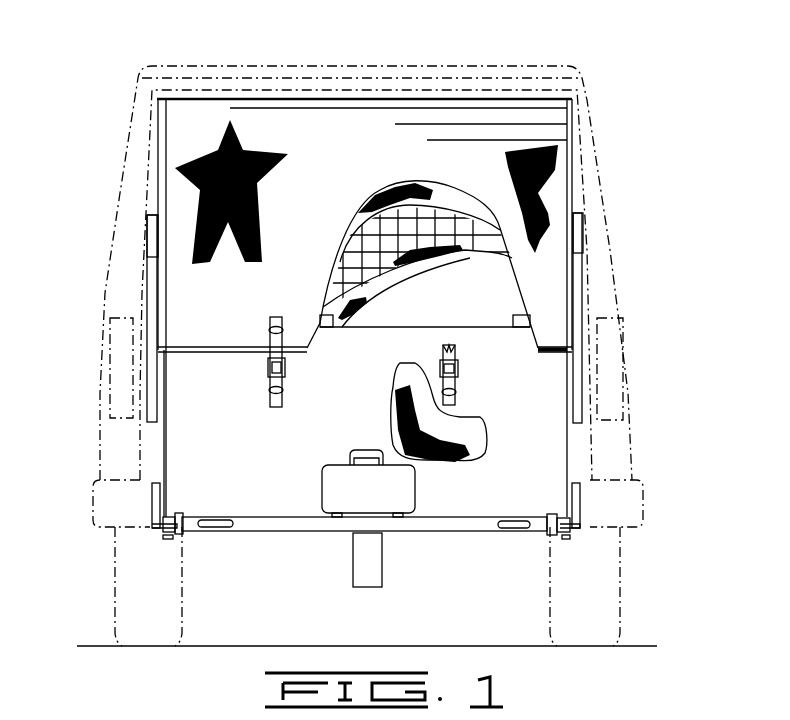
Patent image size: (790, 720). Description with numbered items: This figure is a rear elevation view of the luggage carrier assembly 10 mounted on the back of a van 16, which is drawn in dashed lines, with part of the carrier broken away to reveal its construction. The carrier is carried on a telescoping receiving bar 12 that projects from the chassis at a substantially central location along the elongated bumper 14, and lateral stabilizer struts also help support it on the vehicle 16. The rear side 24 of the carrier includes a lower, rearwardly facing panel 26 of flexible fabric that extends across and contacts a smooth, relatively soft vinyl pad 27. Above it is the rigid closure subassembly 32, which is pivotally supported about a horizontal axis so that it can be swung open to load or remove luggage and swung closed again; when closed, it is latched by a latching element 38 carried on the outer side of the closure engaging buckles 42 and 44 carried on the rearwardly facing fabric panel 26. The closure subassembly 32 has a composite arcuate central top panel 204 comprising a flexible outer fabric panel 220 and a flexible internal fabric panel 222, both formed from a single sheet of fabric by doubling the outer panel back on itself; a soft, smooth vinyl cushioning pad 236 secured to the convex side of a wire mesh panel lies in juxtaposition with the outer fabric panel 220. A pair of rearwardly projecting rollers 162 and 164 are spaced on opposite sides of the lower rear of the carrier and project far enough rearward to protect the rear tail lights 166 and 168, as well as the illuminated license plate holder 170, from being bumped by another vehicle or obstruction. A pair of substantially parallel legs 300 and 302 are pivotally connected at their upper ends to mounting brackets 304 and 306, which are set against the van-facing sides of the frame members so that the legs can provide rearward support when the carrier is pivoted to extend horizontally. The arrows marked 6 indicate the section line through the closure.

The section line for FIG. 6 is at (367, 42).
The luggage carrier assembly 10 is at (412, 538).
The telescoping receiving bar 12 is at (355, 577).
The elongated bumper 14 is at (117, 510).
The van 16 is at (123, 256).
The rear side 24 is at (543, 432).
The lower rearwardly facing panel 26 is at (370, 401).
The vinyl pad 27 is at (421, 460).
The rigid closure subassembly 32 is at (550, 288).
The latching element 38 is at (270, 340).
The buckle 42 is at (268, 365).
The buckle 44 is at (458, 373).
The rearwardly projecting roller 162 is at (180, 513).
The rearwardly projecting roller 164 is at (557, 517).
The rear tail light 166 is at (212, 525).
The rear tail light 168 is at (517, 528).
The illuminated license plate holder 170 is at (345, 452).
The composite arcuate central top panel 204 is at (357, 143).
The flexible outer fabric panel 220 is at (340, 203).
The flexible internal fabric panel 222 is at (377, 293).
The vinyl cushioning pad 236 is at (467, 183).
The leg 300 is at (152, 298).
The leg 302 is at (580, 320).
The mounting bracket 304 is at (152, 240).
The mounting bracket 306 is at (578, 247).